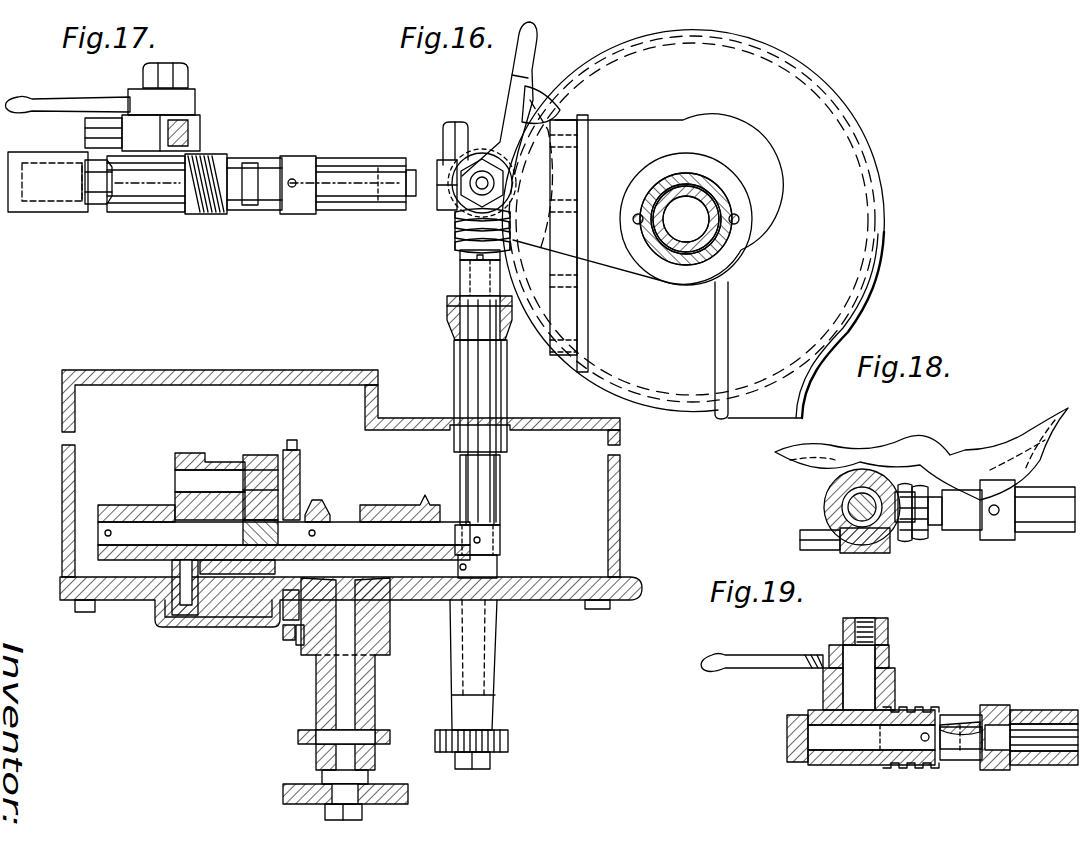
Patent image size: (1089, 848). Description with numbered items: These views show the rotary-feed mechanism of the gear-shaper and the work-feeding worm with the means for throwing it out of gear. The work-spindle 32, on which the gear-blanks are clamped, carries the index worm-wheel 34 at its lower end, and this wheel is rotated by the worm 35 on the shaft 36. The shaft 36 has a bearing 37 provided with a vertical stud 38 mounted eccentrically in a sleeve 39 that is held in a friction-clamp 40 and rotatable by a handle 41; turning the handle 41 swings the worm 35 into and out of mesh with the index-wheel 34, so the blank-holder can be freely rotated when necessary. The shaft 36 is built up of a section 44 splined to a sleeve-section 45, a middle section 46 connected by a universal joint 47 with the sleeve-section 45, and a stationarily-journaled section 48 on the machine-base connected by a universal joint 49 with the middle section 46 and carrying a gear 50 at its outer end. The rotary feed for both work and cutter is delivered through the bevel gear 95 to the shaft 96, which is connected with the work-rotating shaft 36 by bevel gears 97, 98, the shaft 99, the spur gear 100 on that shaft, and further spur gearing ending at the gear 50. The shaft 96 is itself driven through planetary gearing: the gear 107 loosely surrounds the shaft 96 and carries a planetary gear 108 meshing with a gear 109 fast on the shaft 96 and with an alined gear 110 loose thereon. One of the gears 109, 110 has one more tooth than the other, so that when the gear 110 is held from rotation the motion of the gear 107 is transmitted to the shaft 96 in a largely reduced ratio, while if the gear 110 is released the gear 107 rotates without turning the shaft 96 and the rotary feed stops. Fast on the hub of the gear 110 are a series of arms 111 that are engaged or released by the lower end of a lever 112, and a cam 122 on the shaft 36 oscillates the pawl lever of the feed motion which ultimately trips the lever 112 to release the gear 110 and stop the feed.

In FIG. 16, the work-spindle 32 is at (709, 237).
In FIG. 16, the index worm-wheel 34 is at (513, 240).
In FIG. 18, the index worm-wheel 34 is at (905, 470).
In FIG. 17, the worm 35 is at (204, 213).
In FIG. 16, the worm 35 is at (458, 228).
In FIG. 18, the worm 35 is at (912, 540).
In FIG. 17, the shaft 36 is at (366, 160).
In FIG. 16, the shaft 36 is at (465, 396).
In FIG. 18, the shaft 36 is at (1008, 522).
In FIG. 19, the shaft 36 is at (1044, 726).
In FIG. 17, the bearing 37 is at (143, 186).
In FIG. 19, the bearing 37 is at (820, 765).
In FIG. 18, the vertical stud 38 is at (828, 514).
In FIG. 19, the vertical stud 38 is at (868, 668).
In FIG. 18, the sleeve 39 is at (850, 545).
In FIG. 19, the sleeve 39 is at (826, 660).
In FIG. 17, the friction-clamp 40 is at (198, 118).
In FIG. 16, the friction-clamp 40 is at (442, 165).
In FIG. 18, the friction-clamp 40 is at (830, 496).
In FIG. 17, the handle 41 is at (86, 104).
In FIG. 16, the handle 41 is at (490, 128).
In FIG. 19, the handle 41 is at (752, 670).
In FIG. 16, the section 44 is at (498, 392).
In FIG. 19, the section 44 is at (902, 745).
In FIG. 16, the sleeve-section 45 is at (460, 278).
In FIG. 19, the sleeve-section 45 is at (962, 722).
In FIG. 16, the middle section 46 is at (500, 474).
In FIG. 19, the middle section 46 is at (1062, 710).
In FIG. 16, the universal joint 47 is at (447, 312).
In FIG. 19, the universal joint 47 is at (995, 725).
In FIG. 16, the stationarily-journaled section 48 is at (488, 700).
In FIG. 16, the universal joint 49 is at (500, 540).
In FIG. 16, the gear 50 is at (509, 744).
In FIG. 16, the bevel gear 95 is at (463, 505).
In FIG. 16, the shaft 96 is at (343, 520).
In FIG. 16, the bevel gear 97 is at (318, 500).
In FIG. 16, the bevel gear 98 is at (378, 520).
In FIG. 16, the shaft 99 is at (345, 686).
In FIG. 16, the spur gear 100 is at (398, 784).
In FIG. 16, the gear 107 is at (185, 442).
In FIG. 16, the planetary gear 108 is at (245, 458).
In FIG. 16, the gear 109 is at (232, 560).
In FIG. 16, the gear 110 is at (270, 560).
In FIG. 16, the arms 111 is at (291, 440).
In FIG. 16, the lever 112 is at (283, 630).
In FIG. 16, the cam 122 is at (490, 568).